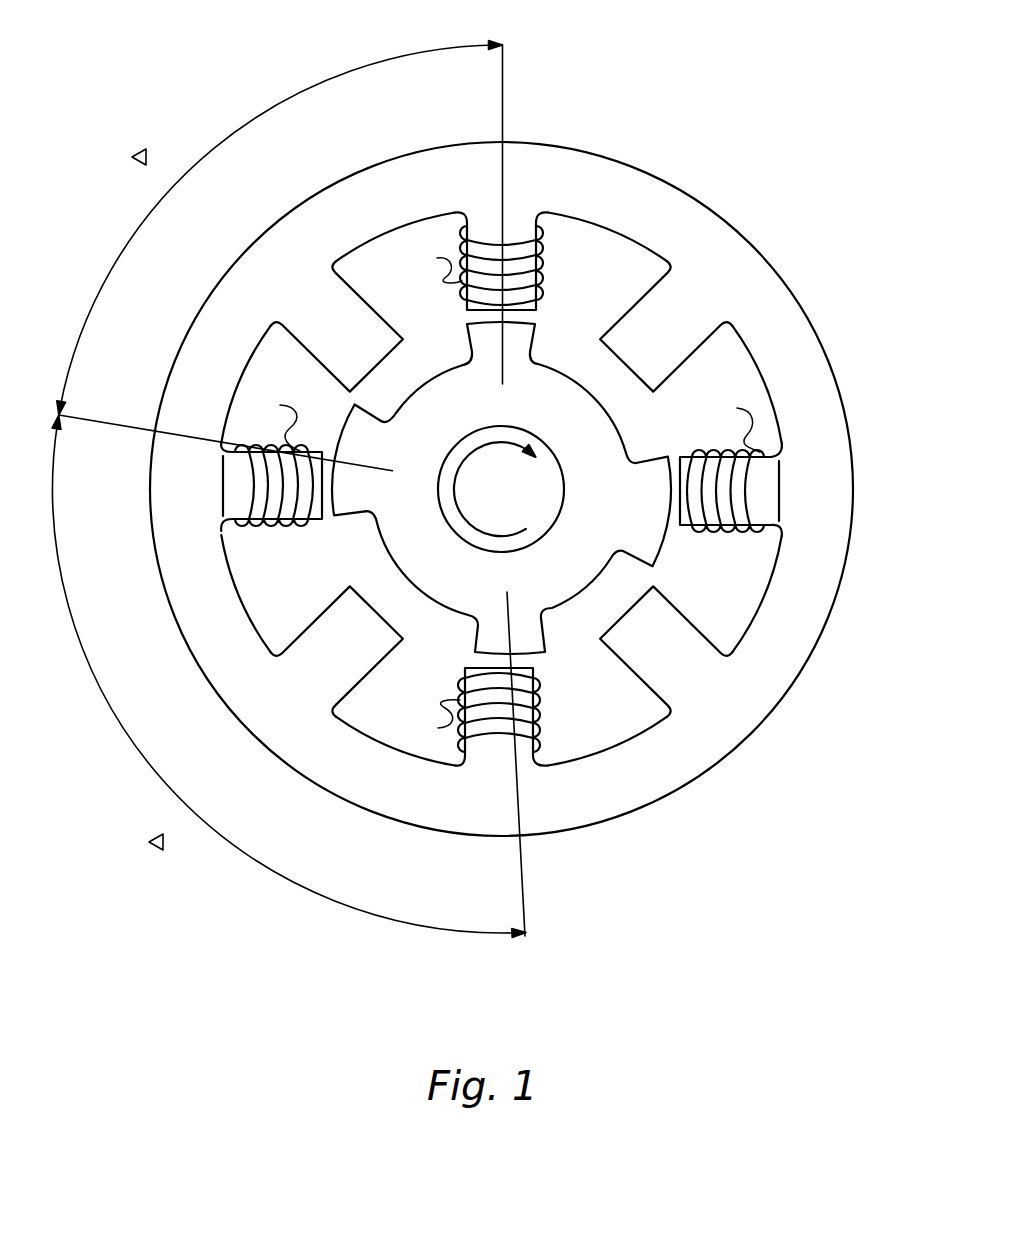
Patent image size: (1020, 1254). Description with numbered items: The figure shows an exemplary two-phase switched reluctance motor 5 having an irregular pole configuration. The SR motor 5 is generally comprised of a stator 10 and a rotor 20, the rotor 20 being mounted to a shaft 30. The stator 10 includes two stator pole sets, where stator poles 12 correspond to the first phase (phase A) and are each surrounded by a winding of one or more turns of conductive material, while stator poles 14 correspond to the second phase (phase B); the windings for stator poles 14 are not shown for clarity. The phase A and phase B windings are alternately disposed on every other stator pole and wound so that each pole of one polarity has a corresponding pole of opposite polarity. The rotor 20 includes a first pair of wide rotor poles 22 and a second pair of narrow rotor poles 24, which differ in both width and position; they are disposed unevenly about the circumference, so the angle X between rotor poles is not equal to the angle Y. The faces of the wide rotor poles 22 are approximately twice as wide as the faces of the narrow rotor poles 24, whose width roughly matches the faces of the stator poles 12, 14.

The SR motor 5 is at (777, 140).
The stator 10 is at (836, 352).
The stator pole set 12 is at (540, 301).
The stator pole set 14 is at (333, 362).
The rotor 20 is at (440, 607).
The first pair of rotor poles 22 is at (366, 519).
The second pair of rotor poles 24 is at (541, 348).
The shaft 30 is at (516, 503).